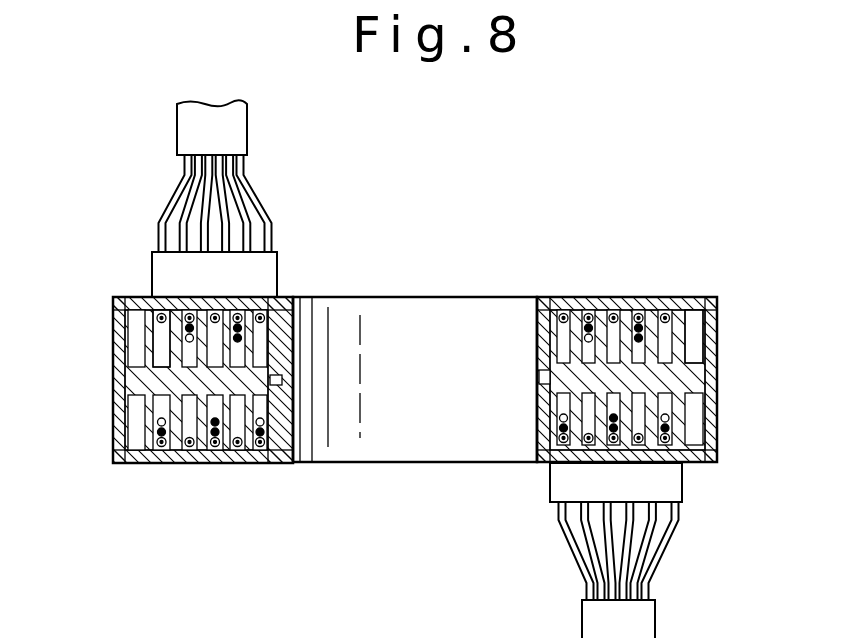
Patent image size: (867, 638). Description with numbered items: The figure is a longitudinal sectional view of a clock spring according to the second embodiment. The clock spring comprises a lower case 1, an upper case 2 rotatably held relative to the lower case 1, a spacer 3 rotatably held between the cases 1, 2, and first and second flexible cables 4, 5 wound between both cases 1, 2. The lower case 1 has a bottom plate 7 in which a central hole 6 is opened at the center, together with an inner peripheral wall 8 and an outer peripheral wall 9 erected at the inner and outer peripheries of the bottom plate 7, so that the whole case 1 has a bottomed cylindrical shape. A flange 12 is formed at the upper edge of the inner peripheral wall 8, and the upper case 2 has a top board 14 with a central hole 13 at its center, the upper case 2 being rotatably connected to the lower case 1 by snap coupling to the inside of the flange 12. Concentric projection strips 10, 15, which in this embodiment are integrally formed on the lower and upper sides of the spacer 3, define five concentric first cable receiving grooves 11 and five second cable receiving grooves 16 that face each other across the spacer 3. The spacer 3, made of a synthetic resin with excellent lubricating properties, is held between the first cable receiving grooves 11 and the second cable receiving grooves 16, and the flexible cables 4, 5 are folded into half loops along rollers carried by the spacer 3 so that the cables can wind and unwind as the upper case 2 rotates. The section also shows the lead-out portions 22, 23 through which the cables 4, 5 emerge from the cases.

The lower case 1 is at (724, 447).
The upper case 2 is at (680, 294).
The spacer 3 is at (126, 382).
The first flexible cables 4 is at (162, 312).
The second flexible cables 5 is at (158, 300).
The central hole 6 is at (306, 455).
The bottom plate 7 is at (214, 462).
The inner peripheral wall 8 is at (314, 322).
The outer peripheral wall 9 is at (116, 395).
The projection strips 10 is at (146, 425).
The first cable receiving grooves 11 is at (698, 420).
The flange 12 is at (545, 297).
The central hole 13 is at (541, 345).
The top board 14 is at (582, 297).
The projection strips 15 is at (696, 345).
The second cable receiving grooves 16 is at (230, 318).
The lower cable connector 22 is at (572, 480).
The upper cable connector 23 is at (232, 262).